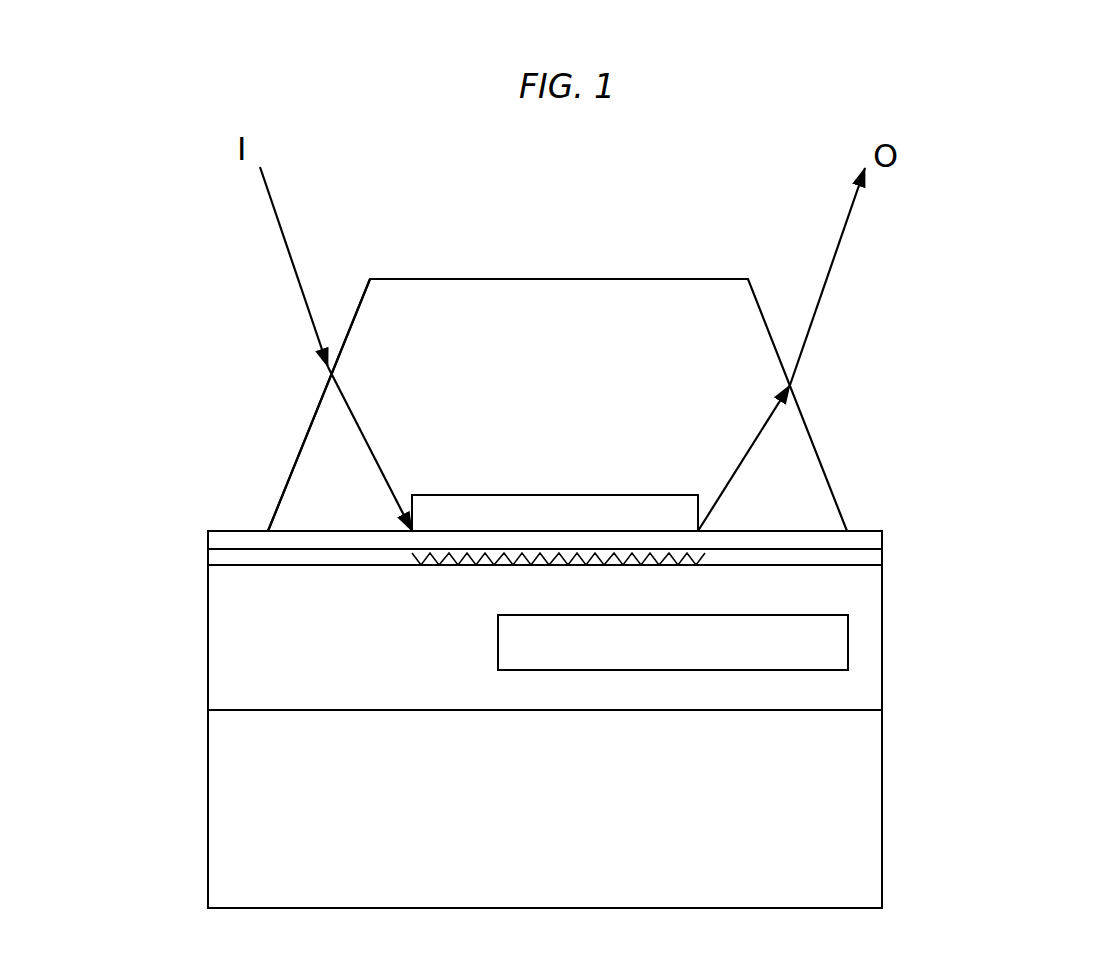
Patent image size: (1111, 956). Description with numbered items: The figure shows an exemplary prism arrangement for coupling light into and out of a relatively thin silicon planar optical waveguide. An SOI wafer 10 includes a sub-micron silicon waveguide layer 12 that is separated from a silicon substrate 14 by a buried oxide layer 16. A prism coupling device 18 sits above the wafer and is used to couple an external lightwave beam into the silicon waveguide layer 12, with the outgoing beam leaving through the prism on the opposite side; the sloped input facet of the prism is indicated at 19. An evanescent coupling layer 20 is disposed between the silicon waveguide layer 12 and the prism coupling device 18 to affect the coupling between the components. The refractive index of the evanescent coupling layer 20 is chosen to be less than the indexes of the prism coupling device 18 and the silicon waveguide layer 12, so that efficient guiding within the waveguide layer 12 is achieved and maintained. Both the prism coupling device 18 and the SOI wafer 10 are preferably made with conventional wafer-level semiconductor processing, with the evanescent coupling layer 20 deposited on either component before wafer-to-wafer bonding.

The SOI wafer 10 is at (1000, 595).
The silicon waveguide layer 12 is at (867, 557).
The silicon substrate 14 is at (232, 815).
The buried oxide layer 16 is at (223, 625).
The prism coupling device 18 is at (522, 295).
The prism input facet 19 is at (299, 440).
The evanescent coupling layer 20 is at (215, 538).